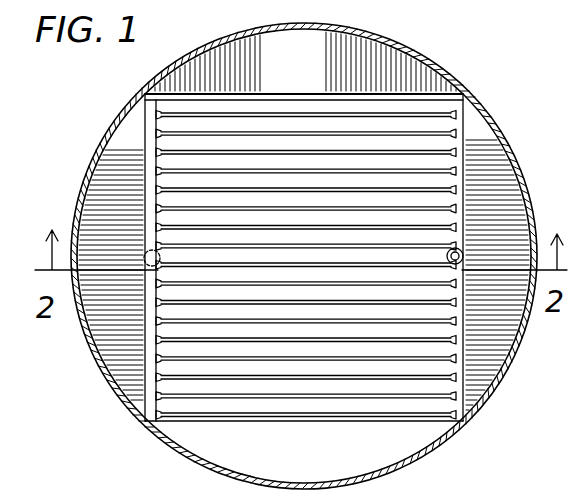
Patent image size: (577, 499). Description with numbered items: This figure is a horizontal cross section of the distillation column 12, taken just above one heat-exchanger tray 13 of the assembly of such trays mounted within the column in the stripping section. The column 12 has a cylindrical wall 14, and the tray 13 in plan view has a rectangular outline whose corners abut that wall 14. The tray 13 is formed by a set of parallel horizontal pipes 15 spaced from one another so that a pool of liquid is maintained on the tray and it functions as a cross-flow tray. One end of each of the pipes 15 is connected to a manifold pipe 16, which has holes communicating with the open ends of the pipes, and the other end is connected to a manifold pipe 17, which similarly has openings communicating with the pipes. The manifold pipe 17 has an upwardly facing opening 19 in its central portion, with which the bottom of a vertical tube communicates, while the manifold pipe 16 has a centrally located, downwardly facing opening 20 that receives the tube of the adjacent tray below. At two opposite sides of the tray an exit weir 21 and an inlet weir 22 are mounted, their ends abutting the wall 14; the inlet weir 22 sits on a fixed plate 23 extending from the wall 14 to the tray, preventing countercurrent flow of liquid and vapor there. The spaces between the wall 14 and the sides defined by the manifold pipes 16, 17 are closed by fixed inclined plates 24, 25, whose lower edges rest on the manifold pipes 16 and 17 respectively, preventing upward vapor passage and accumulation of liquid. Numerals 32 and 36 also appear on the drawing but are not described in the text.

The distillation column 12 is at (473, 69).
The heat-exchanger tray 13 is at (472, 125).
The wall 14 is at (112, 145).
The parallel horizontal pipes 15 is at (307, 410).
The manifold pipe 16 is at (156, 366).
The manifold pipe 17 is at (458, 365).
The upwardly facing opening 19 is at (462, 251).
The downwardly facing opening 20 is at (147, 268).
The exit weir 21 is at (272, 424).
The inlet weir 22 is at (350, 64).
The fixed plate 23 is at (338, 43).
The fixed inclined plate 24 is at (122, 167).
The fixed inclined plate 25 is at (500, 197).
The mounting member 32 is at (576, 408).
The fastener 36 is at (566, 368).